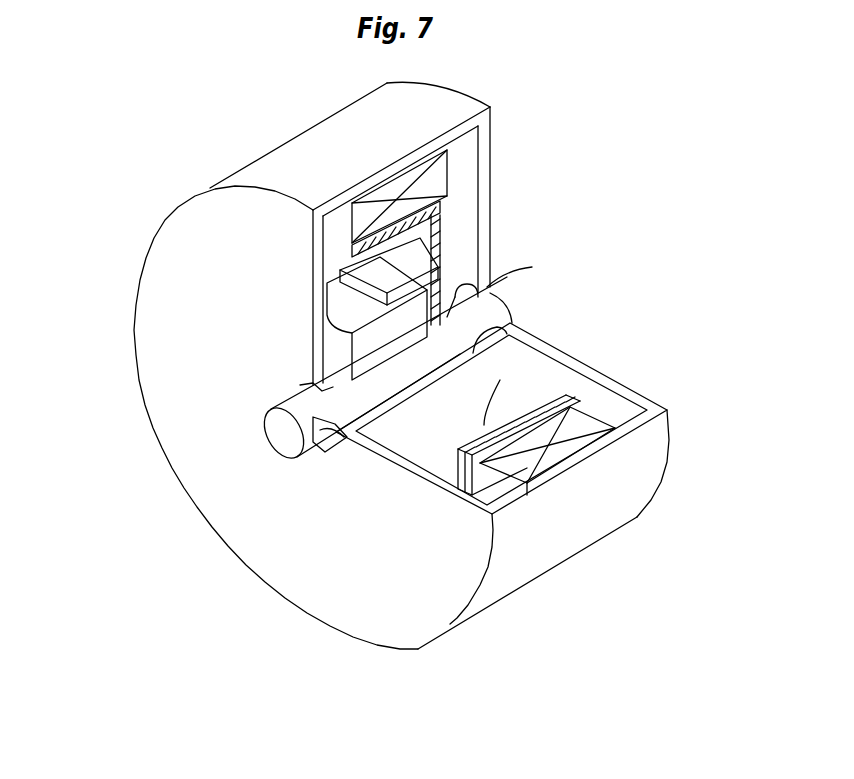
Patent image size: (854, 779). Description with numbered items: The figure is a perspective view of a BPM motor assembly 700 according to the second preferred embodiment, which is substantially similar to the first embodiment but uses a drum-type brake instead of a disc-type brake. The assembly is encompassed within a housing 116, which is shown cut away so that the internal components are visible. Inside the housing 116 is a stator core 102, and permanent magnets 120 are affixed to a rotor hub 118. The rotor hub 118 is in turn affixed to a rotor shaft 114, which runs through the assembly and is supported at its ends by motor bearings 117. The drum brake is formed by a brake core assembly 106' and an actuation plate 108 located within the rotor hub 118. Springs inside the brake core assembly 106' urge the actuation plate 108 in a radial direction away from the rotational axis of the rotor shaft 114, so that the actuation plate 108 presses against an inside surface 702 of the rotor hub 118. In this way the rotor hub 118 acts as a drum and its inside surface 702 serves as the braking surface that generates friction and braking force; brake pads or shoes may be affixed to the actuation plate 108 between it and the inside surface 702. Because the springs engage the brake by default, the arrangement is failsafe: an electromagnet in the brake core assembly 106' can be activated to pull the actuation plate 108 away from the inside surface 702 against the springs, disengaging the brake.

The BPM motor assembly 700 is at (126, 144).
The actuation plate 108 is at (440, 240).
The brake core assembly 106' is at (467, 297).
The motor bearings 117 is at (480, 292).
The inside surface of the rotor hub 702 is at (614, 337).
The rotor hub 118 is at (517, 402).
The permanent magnets 120 is at (578, 425).
The stator core 102 is at (582, 421).
The housing 116 is at (643, 452).
The rotor shaft 114 is at (277, 432).